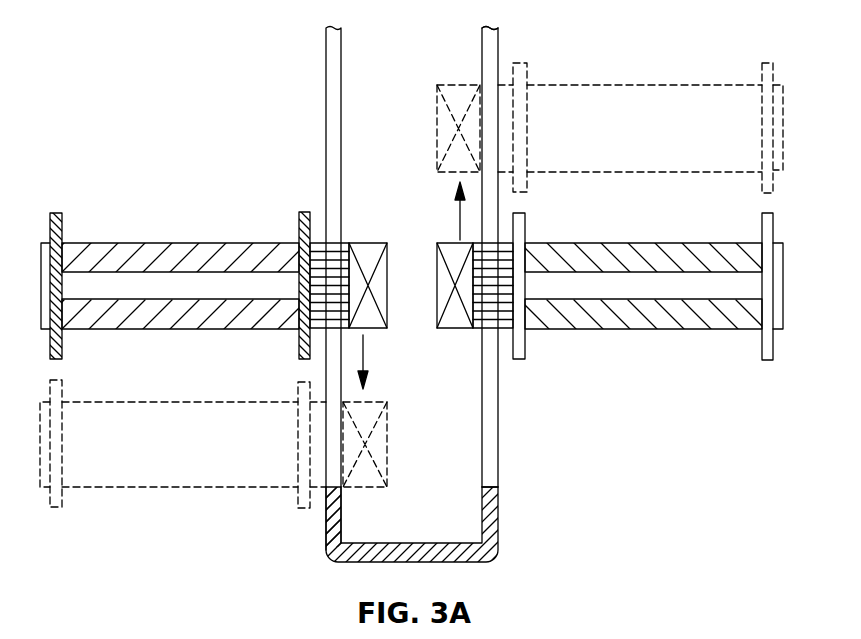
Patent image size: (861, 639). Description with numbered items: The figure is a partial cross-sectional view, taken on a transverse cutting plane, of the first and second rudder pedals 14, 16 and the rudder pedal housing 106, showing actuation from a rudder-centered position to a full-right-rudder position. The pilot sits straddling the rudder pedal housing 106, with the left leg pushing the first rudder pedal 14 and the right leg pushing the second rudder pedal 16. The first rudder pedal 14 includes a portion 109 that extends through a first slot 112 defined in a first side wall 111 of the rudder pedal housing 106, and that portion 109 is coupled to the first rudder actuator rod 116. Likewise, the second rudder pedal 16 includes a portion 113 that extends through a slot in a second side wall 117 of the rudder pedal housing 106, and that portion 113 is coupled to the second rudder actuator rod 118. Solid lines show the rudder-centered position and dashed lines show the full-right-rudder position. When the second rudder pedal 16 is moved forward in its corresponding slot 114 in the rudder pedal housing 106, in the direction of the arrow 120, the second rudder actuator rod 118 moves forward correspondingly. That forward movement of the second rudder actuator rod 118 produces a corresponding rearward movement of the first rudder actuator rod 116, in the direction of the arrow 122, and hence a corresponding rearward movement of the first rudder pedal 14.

The first rudder pedal 14 is at (157, 331).
The second rudder pedal 16 is at (656, 331).
The rudder pedal housing 106 is at (498, 527).
The portion of the first rudder pedal 109 is at (316, 264).
The first side wall 111 is at (328, 522).
The first slot 112 is at (338, 130).
The portion of the second rudder pedal 113 is at (497, 265).
The slot 114 is at (490, 406).
The first rudder actuator rod 116 is at (366, 243).
The second side wall 117 is at (499, 41).
The second rudder actuator rod 118 is at (458, 333).
The arrow 120 is at (456, 210).
The arrow 122 is at (366, 354).